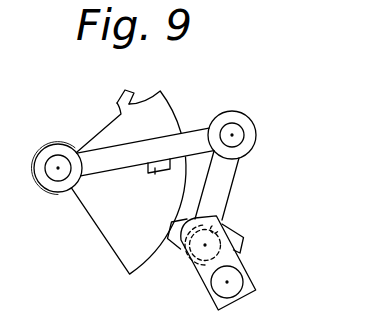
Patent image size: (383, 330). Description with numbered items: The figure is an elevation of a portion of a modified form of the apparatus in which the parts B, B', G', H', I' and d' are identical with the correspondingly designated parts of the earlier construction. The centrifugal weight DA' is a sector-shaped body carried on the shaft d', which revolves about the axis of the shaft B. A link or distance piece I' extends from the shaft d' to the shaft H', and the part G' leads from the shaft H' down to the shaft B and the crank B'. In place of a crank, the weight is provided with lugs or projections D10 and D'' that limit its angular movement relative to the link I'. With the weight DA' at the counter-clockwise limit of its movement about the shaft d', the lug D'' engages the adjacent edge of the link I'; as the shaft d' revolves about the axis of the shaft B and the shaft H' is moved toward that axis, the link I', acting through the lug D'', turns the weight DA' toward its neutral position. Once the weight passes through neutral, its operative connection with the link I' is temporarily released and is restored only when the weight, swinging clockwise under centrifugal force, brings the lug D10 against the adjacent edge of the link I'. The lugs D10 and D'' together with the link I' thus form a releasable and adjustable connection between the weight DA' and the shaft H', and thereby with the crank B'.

The weight DA' is at (115, 182).
The lug or projection D10 is at (117, 102).
The lug or projection D'' is at (148, 189).
The link or distance piece I' is at (156, 130).
The shaft d' is at (48, 178).
The shaft H' is at (247, 135).
The connecting part G' is at (231, 185).
The shaft B is at (232, 263).
The crank B' is at (222, 240).